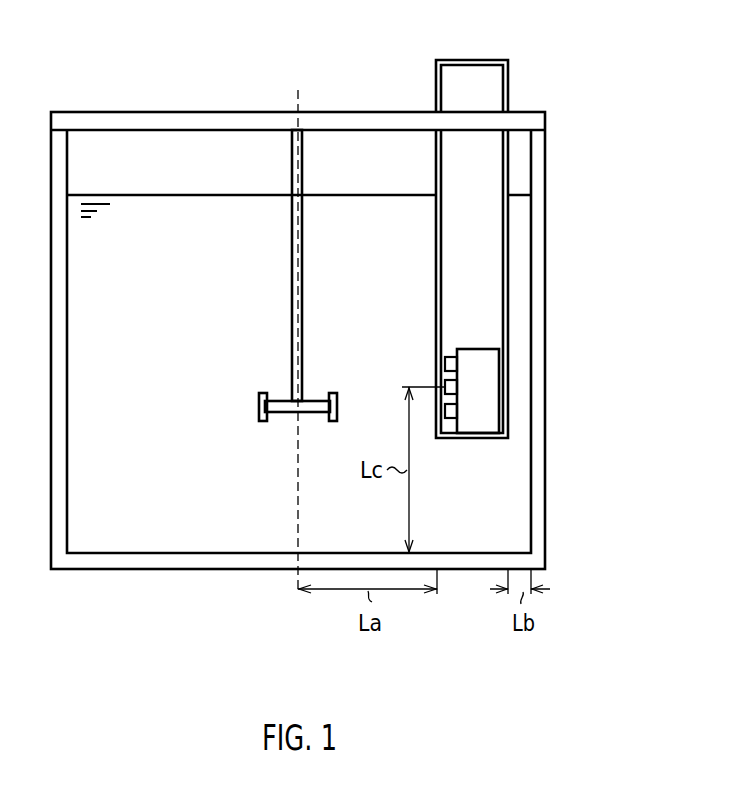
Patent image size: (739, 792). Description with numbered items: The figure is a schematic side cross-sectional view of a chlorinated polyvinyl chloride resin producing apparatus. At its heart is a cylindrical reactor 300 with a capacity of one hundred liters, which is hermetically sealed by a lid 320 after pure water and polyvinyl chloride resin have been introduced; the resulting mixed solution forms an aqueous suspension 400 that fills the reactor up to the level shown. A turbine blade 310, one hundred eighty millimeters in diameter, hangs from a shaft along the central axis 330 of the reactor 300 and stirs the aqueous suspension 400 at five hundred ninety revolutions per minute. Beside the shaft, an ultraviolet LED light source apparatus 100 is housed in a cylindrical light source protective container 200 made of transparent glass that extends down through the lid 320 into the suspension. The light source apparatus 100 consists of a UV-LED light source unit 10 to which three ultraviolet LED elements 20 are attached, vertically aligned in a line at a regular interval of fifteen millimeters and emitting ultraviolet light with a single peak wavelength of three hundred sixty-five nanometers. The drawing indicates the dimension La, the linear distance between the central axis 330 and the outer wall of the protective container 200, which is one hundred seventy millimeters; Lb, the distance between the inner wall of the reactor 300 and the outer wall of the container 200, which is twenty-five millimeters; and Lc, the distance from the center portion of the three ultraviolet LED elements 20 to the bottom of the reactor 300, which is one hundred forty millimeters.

The UV-LED light source unit 10 is at (483, 364).
The ultraviolet LED elements 20 is at (456, 362).
The ultraviolet LED light source apparatus 100 is at (478, 349).
The cylindrical light source protective container 200 is at (471, 60).
The cylindrical reactor 300 is at (546, 170).
The turbine blade 310 is at (279, 413).
The lid 320 is at (165, 112).
The central axis 330 is at (298, 104).
The aqueous suspension 400 is at (147, 515).